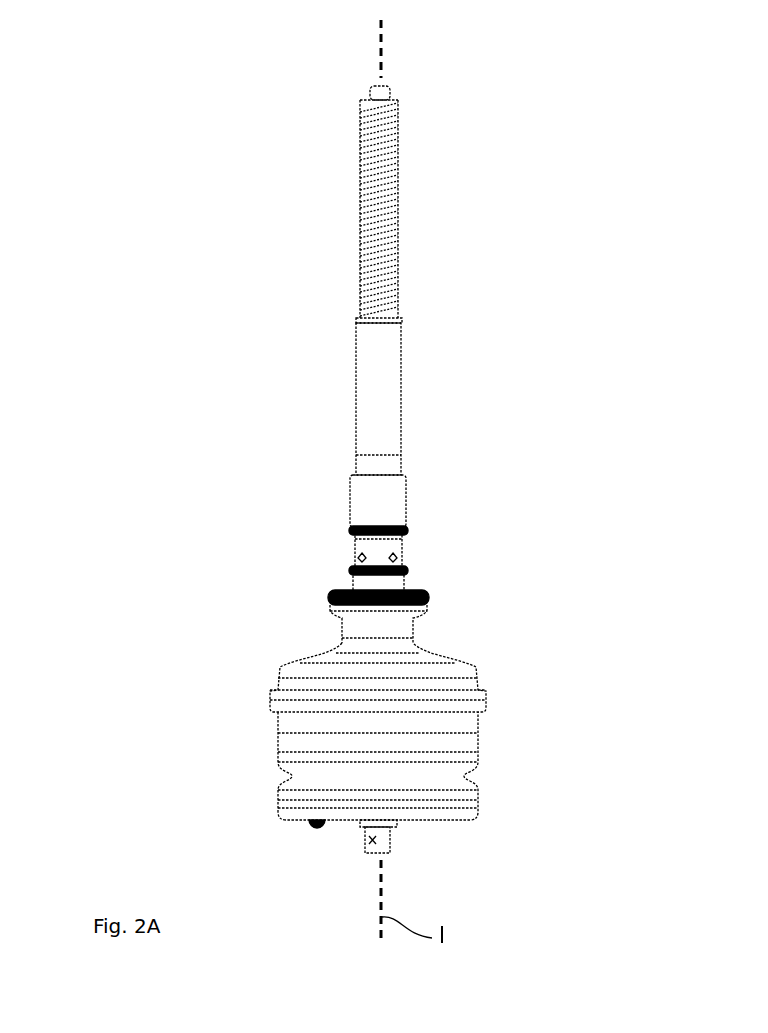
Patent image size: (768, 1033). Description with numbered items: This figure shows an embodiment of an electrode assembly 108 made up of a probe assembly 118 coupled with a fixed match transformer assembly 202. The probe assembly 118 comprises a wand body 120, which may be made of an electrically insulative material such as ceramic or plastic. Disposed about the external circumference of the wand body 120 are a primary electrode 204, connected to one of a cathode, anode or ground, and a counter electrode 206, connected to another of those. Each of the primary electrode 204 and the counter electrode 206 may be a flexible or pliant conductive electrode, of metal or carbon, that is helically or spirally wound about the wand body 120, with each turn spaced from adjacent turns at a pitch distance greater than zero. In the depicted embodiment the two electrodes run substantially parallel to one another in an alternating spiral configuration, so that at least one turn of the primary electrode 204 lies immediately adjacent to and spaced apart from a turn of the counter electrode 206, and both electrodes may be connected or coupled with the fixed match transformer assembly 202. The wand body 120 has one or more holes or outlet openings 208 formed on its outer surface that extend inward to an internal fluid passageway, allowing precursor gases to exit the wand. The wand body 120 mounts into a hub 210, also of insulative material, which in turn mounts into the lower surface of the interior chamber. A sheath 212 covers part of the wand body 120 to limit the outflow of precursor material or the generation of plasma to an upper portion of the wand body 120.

The electrode assembly 108 is at (657, 806).
The probe assembly 118 is at (312, 521).
The wand body 120 is at (361, 278).
The fixed match transformer assembly 202 is at (283, 771).
The primary electrode 204 is at (362, 232).
The counter electrode 206 is at (360, 212).
The outlet openings 208 is at (395, 216).
The hub 210 is at (395, 515).
The sheath 212 is at (401, 400).